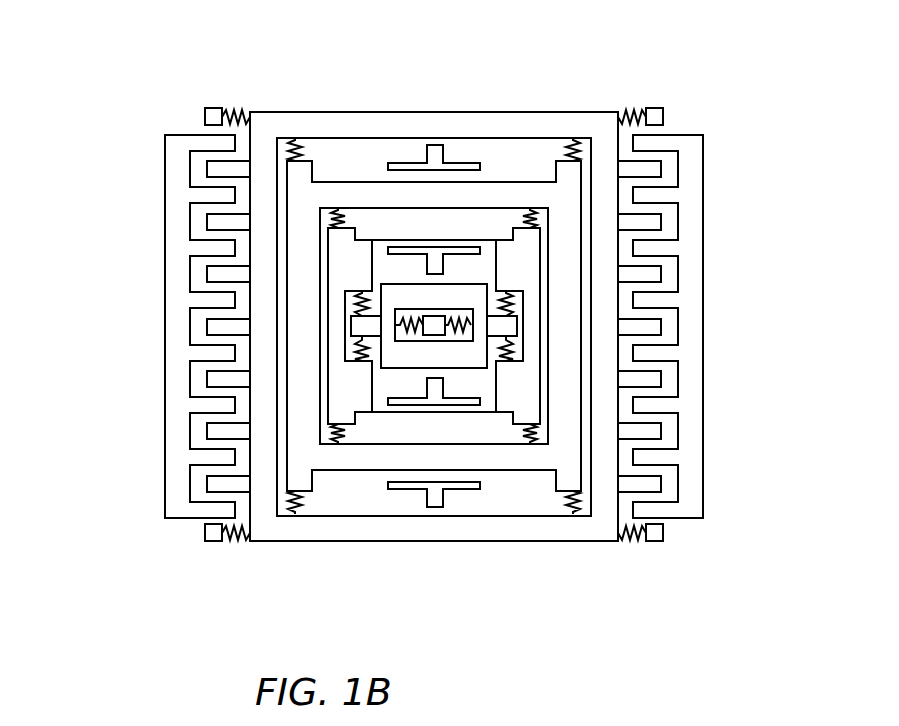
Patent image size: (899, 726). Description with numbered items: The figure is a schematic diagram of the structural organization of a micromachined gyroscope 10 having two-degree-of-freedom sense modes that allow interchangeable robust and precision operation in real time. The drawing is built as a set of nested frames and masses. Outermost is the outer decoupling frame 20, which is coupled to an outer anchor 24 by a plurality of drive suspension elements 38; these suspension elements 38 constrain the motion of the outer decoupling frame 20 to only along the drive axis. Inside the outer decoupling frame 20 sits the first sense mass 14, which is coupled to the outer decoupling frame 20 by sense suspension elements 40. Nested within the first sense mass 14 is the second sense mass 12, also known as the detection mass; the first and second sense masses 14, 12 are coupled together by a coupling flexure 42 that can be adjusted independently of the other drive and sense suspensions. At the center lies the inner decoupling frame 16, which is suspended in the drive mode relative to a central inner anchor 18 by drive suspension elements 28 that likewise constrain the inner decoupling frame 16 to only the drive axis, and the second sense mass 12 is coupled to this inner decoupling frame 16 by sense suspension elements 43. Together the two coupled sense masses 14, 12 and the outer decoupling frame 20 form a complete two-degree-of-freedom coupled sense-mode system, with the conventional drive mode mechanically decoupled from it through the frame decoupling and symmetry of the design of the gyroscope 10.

The gyroscope 10 is at (755, 126).
The second sense mass m_b 12 is at (373, 190).
The first sense mass m_a 14 is at (367, 226).
The inner decoupling frame 16 is at (388, 345).
The inner anchor 18 is at (447, 318).
The outer decoupling frame 20 is at (430, 110).
The outer anchor 24 is at (205, 117).
The drive suspension elements 28 is at (456, 332).
The drive suspension elements 38 is at (235, 114).
The sense suspension elements 40 is at (289, 151).
The coupling flexure 42 is at (333, 222).
The sense suspension elements 43 is at (358, 340).